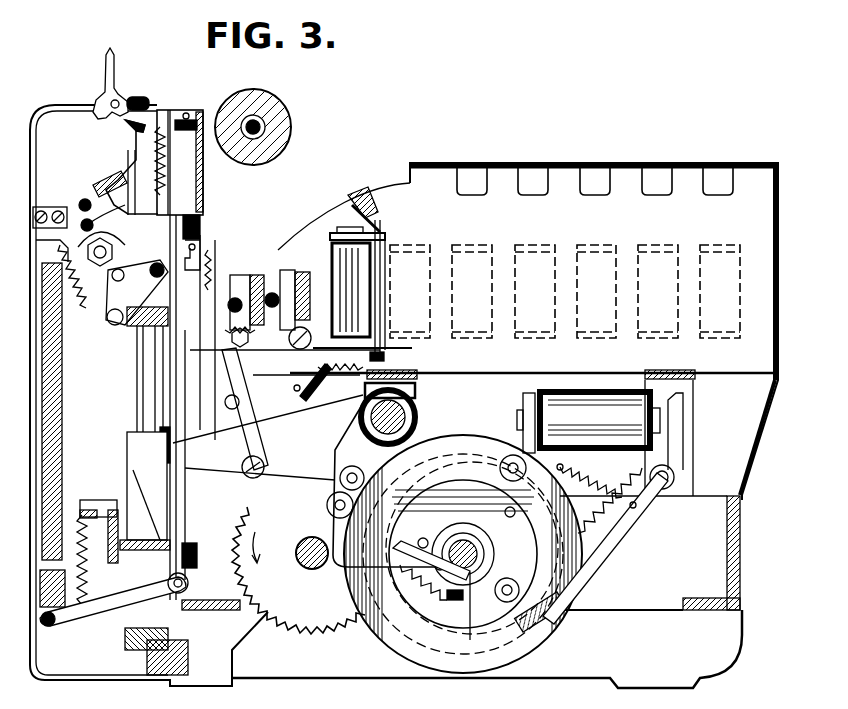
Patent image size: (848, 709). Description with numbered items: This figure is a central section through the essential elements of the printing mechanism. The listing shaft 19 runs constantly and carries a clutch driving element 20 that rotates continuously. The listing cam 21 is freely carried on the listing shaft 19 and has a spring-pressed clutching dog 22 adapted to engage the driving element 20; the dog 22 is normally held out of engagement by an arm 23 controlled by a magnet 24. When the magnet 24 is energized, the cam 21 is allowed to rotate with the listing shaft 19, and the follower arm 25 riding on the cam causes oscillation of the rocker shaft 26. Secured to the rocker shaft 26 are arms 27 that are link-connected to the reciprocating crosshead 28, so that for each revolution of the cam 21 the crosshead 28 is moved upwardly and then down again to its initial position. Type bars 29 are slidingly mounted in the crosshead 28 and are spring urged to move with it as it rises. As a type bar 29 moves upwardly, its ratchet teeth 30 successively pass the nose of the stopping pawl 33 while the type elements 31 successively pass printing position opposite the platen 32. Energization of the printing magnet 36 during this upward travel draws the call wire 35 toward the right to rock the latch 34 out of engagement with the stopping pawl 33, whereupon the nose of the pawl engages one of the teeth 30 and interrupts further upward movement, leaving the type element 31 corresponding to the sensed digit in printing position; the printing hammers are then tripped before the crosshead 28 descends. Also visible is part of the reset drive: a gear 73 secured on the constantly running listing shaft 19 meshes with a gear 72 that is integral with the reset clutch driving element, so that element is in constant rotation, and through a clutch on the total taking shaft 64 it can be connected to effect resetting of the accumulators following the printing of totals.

The listing shaft 19 is at (472, 570).
The clutch driving element 20 is at (466, 527).
The listing cam 21 is at (548, 626).
The clutching dog 22 is at (452, 597).
The arm 23 is at (627, 515).
The magnet 24 is at (588, 407).
The follower arm 25 is at (438, 425).
The rocker shaft 26 is at (412, 404).
The arms 27 is at (222, 452).
The crosshead 28 is at (125, 492).
The type bars 29 is at (203, 228).
The ratchet teeth 30 is at (188, 400).
The type elements 31 is at (205, 160).
The platen 32 is at (292, 128).
The stopping pawl 33 is at (222, 330).
The latch 34 is at (262, 293).
The call wire 35 is at (386, 348).
The printing magnet 36 is at (380, 250).
The total taking shaft 64 is at (310, 568).
The gear 72 is at (255, 585).
The gear 73 is at (380, 620).